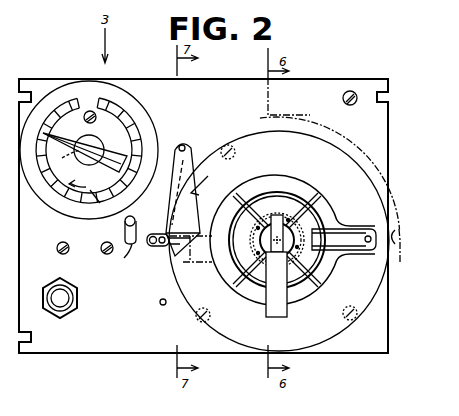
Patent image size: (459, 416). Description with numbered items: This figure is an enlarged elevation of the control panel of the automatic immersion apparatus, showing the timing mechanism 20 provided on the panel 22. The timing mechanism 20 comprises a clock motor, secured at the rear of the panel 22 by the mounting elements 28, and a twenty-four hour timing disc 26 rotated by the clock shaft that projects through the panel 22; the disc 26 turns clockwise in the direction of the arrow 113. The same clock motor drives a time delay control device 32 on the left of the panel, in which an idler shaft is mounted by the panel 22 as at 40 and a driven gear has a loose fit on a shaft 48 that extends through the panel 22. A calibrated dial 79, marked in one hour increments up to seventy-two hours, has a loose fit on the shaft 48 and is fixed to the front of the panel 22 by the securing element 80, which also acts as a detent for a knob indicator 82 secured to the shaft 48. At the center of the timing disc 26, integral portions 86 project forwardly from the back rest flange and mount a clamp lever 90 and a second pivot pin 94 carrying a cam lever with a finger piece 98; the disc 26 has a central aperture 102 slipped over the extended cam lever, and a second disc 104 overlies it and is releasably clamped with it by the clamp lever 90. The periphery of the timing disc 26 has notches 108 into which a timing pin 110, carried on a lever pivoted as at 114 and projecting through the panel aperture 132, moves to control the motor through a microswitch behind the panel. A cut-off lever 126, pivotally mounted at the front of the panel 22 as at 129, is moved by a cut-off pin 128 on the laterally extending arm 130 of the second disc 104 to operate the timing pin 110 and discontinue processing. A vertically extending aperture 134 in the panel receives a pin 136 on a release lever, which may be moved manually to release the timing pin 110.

The timing mechanism 20 is at (241, 121).
The panel 22 is at (47, 78).
The timing disc 26 is at (186, 312).
The mounting elements 28 is at (351, 91).
The time delay control device 32 is at (89, 141).
The shaft mounting 40 is at (216, 154).
The shaft 48 is at (78, 156).
The calibrated dial 79 is at (57, 208).
The securing element 80 is at (90, 110).
The knob indicator 82 is at (66, 141).
The integral portions 86 is at (263, 246).
The clamp lever 90 is at (276, 219).
The second pivot pin 94 is at (262, 234).
The finger piece 98 is at (271, 307).
The central aperture 102 is at (236, 231).
The second disc 104 is at (327, 186).
The notches 108 is at (390, 243).
The timing pin 110 is at (157, 233).
The arrow 113 is at (279, 162).
The pivot 114 is at (160, 303).
The cut-off lever 126 is at (208, 180).
The cut-off pin 128 is at (190, 263).
The pivot 129 is at (181, 145).
The laterally extending arm 130 is at (349, 251).
The panel aperture 132 is at (152, 245).
The vertically extending aperture 134 is at (113, 258).
The pin 136 is at (124, 228).